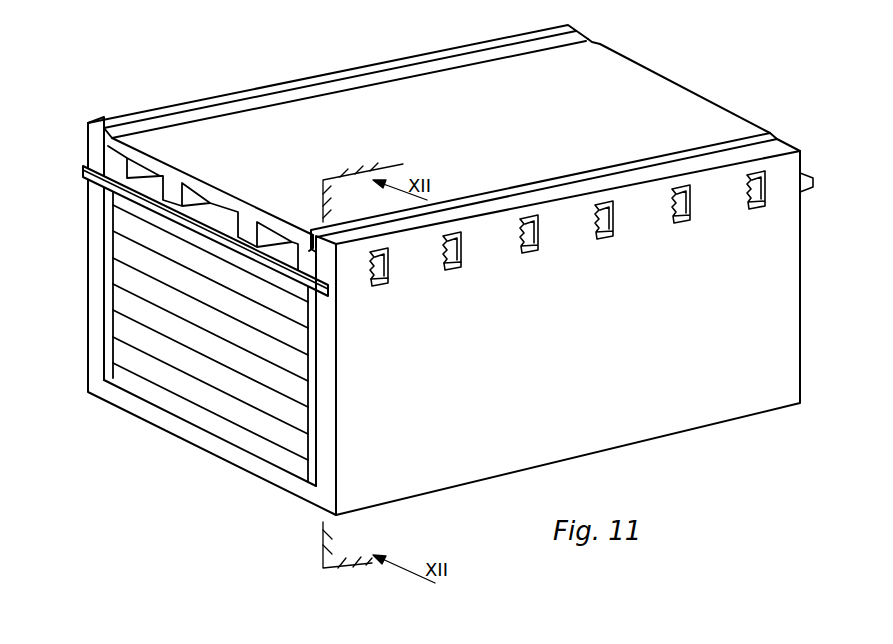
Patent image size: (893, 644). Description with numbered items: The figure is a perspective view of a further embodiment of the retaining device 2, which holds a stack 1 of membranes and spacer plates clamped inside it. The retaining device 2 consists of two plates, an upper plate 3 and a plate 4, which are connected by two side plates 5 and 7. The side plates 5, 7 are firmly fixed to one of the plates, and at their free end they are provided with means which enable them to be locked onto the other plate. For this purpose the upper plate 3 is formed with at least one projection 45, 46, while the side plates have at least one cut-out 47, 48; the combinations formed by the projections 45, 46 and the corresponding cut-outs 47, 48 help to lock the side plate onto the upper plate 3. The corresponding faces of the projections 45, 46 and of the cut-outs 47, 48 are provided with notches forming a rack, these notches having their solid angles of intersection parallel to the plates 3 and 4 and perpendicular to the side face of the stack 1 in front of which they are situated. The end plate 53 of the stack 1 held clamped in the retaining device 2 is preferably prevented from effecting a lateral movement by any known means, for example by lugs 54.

The stack 1 is at (197, 310).
The retaining device 2 is at (276, 84).
The upper plate 3 is at (389, 103).
The plate 4 is at (243, 455).
The side plate 5 is at (102, 301).
The side plate 7 is at (726, 368).
The projection 45 is at (463, 258).
The projection 46 is at (392, 276).
The cut-out 47 is at (458, 275).
The cut-out 48 is at (383, 292).
The end plate 53 is at (155, 188).
The lugs 54 is at (103, 166).